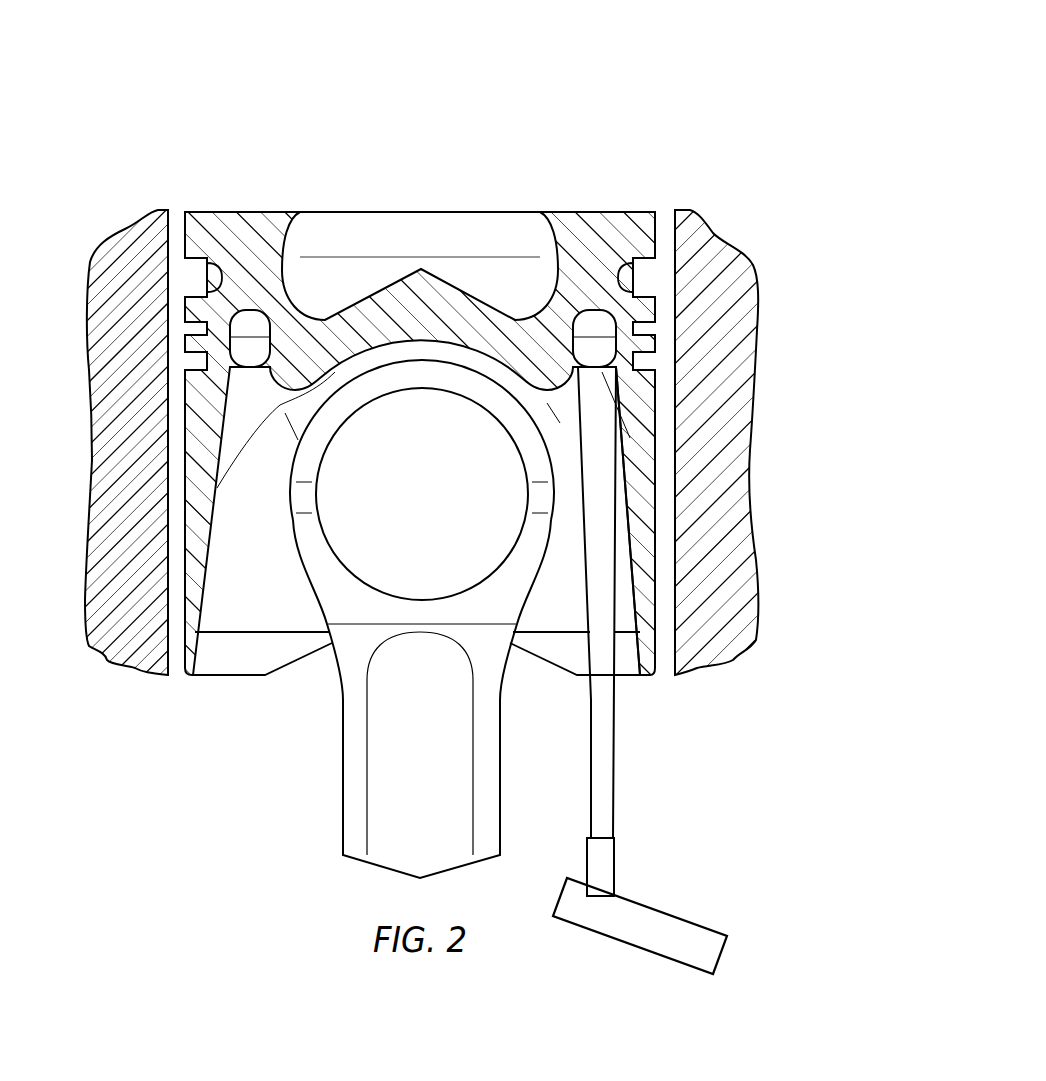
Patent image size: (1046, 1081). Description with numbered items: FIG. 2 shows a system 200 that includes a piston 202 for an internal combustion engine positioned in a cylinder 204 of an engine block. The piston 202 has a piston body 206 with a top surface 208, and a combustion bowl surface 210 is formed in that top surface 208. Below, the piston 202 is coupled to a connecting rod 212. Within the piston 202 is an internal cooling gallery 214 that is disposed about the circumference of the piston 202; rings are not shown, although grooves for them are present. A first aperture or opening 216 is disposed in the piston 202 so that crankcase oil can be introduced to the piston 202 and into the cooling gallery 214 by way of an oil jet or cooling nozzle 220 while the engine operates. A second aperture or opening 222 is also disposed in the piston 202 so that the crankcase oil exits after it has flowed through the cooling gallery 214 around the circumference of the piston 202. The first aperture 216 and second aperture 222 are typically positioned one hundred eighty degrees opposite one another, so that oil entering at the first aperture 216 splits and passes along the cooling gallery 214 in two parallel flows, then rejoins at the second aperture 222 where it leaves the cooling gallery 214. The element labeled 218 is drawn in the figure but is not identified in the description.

The system 200 is at (716, 77).
The piston 202 is at (640, 211).
The cylinder 204 is at (728, 560).
The piston body 206 is at (640, 453).
The top surface 208 is at (243, 211).
The combustion bowl surface 210 is at (380, 283).
The connecting rod 212 is at (362, 798).
The internal cooling gallery 214 is at (598, 323).
The first aperture 216 is at (600, 372).
The probe rod 218 is at (603, 680).
The cooling nozzle 220 is at (603, 873).
The second aperture 222 is at (243, 385).